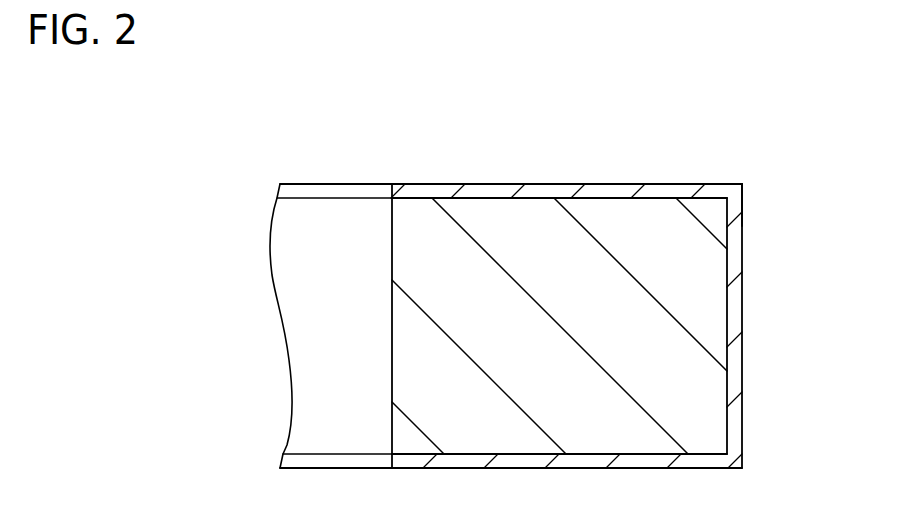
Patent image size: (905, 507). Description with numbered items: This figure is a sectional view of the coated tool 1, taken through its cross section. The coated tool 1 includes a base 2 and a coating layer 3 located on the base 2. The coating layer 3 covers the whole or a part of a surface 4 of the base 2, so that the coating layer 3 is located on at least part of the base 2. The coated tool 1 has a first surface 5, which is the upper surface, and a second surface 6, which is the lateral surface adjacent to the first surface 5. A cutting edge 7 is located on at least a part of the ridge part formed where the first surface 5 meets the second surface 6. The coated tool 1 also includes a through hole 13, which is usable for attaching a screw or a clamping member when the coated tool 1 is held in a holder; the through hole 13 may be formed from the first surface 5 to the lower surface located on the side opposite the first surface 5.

The coated tool 1 is at (220, 121).
The base 2 is at (297, 289).
The coating layer 3 is at (290, 192).
The surface of the base 4 is at (491, 197).
The first surface 5 is at (614, 183).
The second surface 6 is at (743, 309).
The cutting edge 7 is at (742, 184).
The through hole 13 is at (315, 388).